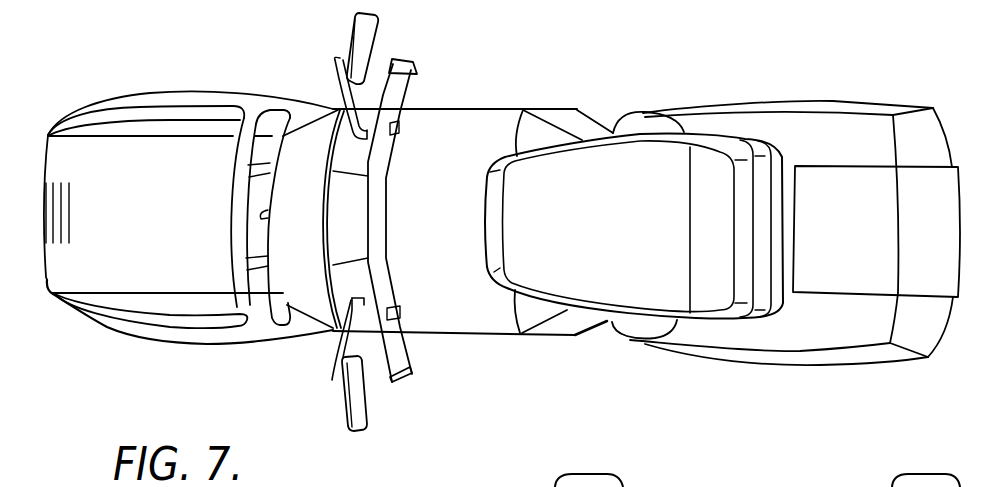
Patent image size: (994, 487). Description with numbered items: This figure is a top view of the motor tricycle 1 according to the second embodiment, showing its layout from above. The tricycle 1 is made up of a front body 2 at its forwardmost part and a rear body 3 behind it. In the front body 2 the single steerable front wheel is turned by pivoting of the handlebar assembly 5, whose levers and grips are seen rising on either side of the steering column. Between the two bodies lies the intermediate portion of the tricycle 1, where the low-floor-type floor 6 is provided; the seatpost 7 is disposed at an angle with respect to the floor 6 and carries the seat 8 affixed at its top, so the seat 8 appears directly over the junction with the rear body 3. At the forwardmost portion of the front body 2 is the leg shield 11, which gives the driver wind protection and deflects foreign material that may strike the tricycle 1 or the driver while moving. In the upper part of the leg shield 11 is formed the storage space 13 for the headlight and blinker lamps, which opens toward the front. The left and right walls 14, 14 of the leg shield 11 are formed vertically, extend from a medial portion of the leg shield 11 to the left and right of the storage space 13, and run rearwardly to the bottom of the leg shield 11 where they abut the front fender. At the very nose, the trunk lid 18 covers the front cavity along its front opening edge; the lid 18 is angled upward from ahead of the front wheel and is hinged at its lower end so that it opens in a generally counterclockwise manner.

The tricycle 1 is at (578, 76).
The front body 2 is at (473, 339).
The rear body 3 is at (837, 94).
The handlebar assembly 5 is at (412, 72).
The floor 6 is at (468, 130).
The seatpost 7 is at (562, 327).
The seat 8 is at (648, 163).
The leg shield 11 is at (281, 349).
The storage space 13 is at (268, 217).
The left and right walls 14 is at (207, 98).
The trunk lid 18 is at (90, 265).